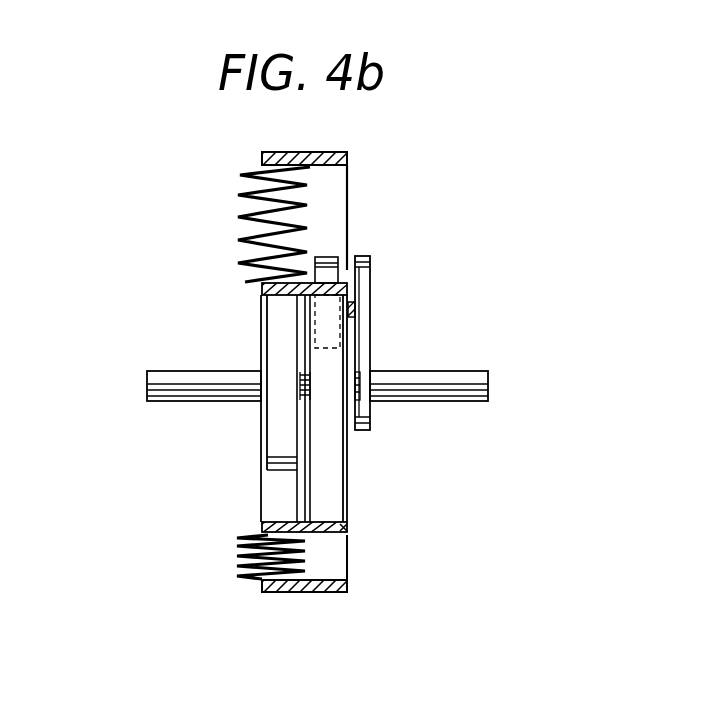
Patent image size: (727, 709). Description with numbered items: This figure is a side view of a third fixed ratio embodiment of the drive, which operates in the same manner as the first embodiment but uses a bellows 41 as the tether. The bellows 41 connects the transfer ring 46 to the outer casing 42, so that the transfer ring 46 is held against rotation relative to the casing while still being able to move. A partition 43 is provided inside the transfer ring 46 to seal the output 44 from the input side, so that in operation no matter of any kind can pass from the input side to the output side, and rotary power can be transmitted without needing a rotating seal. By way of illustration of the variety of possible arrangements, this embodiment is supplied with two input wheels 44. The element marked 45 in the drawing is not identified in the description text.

The bellows 41 is at (237, 217).
The outer casing 42 is at (350, 155).
The partition 43 is at (312, 482).
The input wheel 44 is at (148, 378).
The side plate 45 is at (347, 258).
The transfer ring 46 is at (345, 527).